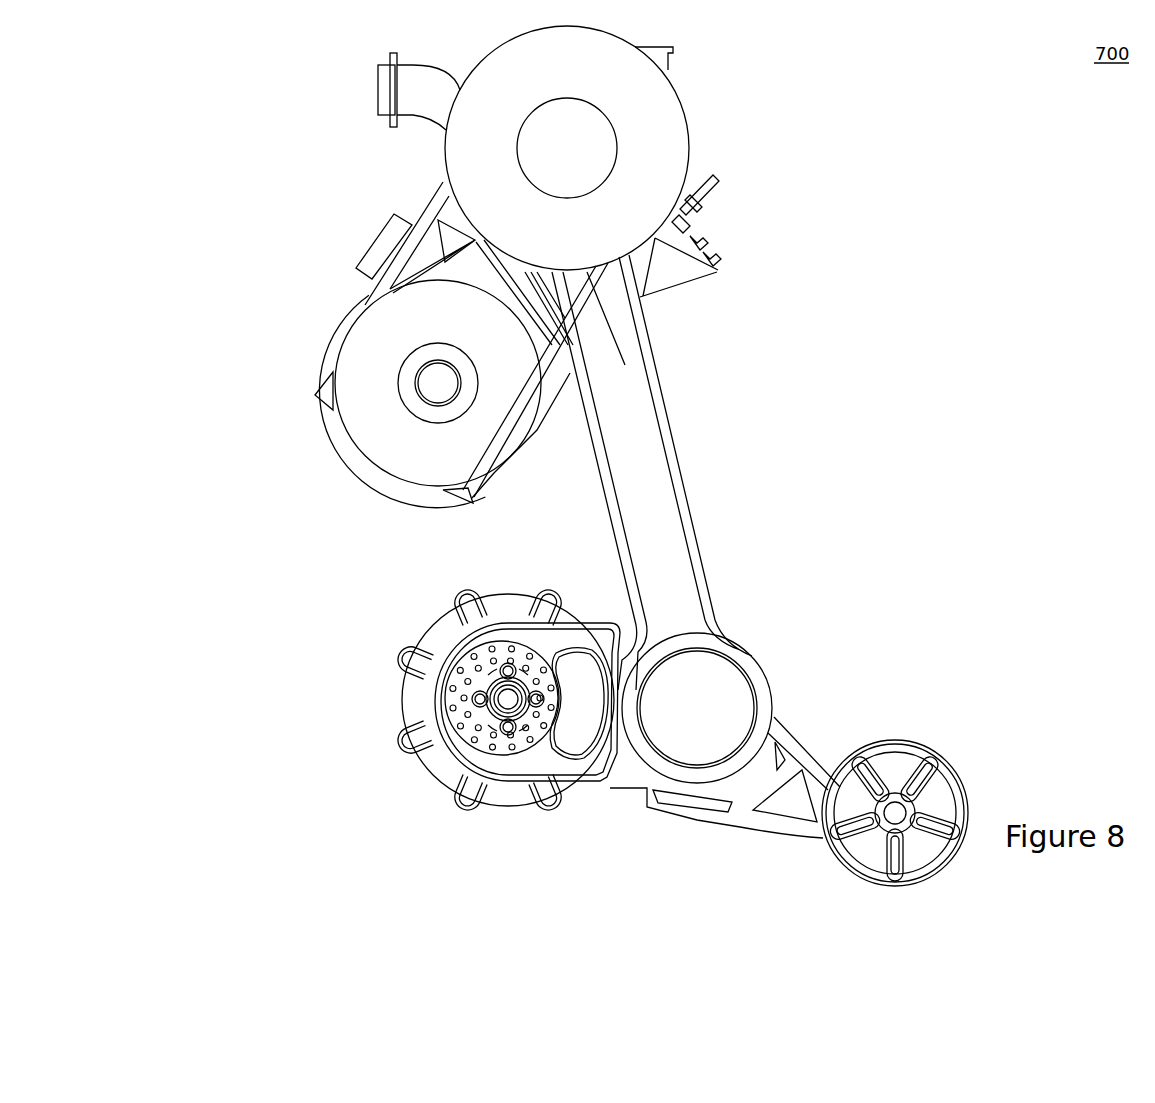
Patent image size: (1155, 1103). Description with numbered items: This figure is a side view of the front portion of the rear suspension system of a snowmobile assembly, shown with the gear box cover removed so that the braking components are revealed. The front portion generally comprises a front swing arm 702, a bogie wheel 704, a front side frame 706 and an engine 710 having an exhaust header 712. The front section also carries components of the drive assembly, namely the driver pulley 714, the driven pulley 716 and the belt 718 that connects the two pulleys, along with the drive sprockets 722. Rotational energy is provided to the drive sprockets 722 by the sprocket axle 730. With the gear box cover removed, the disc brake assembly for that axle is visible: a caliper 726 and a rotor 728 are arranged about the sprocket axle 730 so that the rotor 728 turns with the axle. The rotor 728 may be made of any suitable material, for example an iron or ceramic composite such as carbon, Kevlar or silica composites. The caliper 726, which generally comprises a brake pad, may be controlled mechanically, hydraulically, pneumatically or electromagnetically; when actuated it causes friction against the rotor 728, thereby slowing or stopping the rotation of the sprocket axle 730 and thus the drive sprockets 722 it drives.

The front swing arm 702 is at (637, 470).
The bogie wheel 704 is at (930, 767).
The front side frame 706 is at (797, 755).
The engine 710 is at (322, 367).
The exhaust header 712 is at (378, 95).
The driver pulley 714 is at (435, 465).
The driven pulley 716 is at (647, 148).
The belt 718 is at (575, 307).
The drive sprockets 722 is at (390, 668).
The caliper 726 is at (585, 713).
The rotor 728 is at (463, 717).
The sprocket axle 730 is at (508, 705).